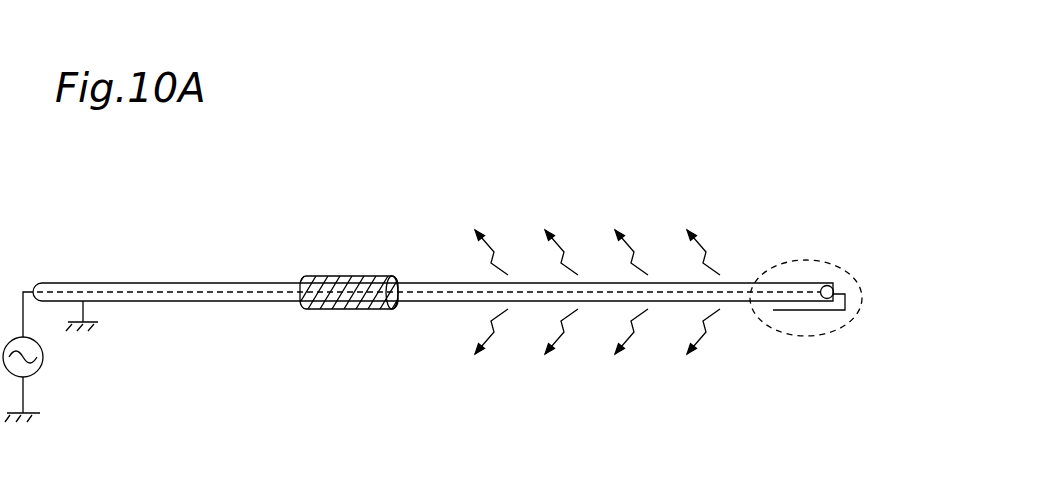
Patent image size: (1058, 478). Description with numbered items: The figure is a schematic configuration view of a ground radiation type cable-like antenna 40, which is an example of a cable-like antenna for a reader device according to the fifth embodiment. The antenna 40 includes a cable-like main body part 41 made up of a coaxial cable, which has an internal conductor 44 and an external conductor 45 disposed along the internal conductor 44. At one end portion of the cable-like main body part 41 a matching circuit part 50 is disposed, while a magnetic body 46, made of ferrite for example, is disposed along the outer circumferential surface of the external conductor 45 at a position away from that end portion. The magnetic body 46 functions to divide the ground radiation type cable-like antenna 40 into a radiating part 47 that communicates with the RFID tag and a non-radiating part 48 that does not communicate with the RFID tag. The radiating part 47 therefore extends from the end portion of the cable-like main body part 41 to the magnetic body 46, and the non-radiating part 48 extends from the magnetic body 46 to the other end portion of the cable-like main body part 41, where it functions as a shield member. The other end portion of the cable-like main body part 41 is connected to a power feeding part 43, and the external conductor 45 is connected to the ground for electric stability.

The ground radiation type cable-like antenna 40 is at (762, 161).
The cable-like main body part 41 is at (135, 375).
The power feeding part 43 is at (43, 355).
The internal conductor 44 is at (252, 292).
The external conductor 45 is at (170, 283).
The magnetic body 46 is at (347, 309).
The radiating part 47 is at (398, 230).
The non-radiating part 48 is at (23, 230).
The matching circuit part 50 is at (805, 337).